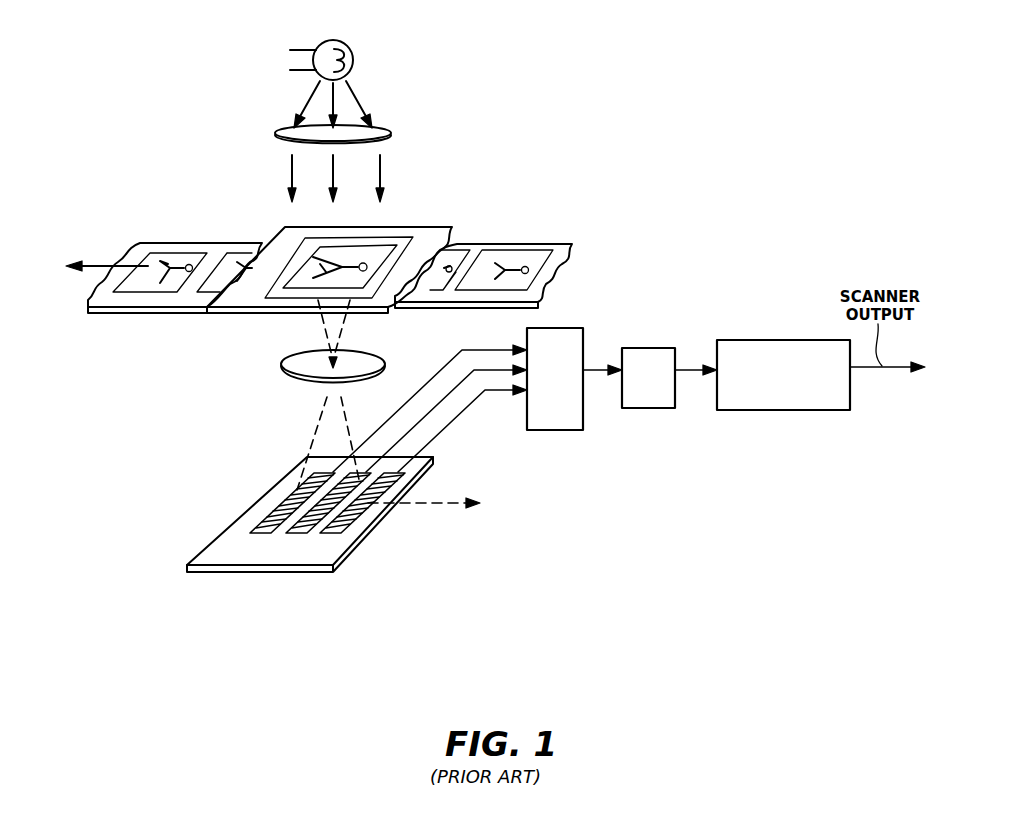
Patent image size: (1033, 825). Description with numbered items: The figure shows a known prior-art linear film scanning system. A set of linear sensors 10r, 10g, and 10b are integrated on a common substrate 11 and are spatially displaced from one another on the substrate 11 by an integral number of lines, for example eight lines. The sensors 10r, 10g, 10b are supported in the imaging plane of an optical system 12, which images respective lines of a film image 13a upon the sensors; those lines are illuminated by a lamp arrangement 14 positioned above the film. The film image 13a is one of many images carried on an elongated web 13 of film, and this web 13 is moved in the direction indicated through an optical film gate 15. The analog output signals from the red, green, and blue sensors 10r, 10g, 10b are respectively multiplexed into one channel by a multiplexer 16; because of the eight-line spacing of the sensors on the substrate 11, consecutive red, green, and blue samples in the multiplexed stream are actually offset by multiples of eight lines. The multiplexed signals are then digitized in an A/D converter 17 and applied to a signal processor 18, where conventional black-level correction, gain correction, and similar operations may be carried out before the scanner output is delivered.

The linear sensor (red) 10r is at (260, 514).
The linear sensor (green) 10g is at (302, 534).
The linear sensor (blue) 10b is at (345, 535).
The substrate 11 is at (226, 572).
The optical system 12 is at (283, 362).
The elongated web of film 13 is at (522, 243).
The film image 13a is at (378, 233).
The lamp arrangement 14 is at (353, 70).
The optical film gate 15 is at (372, 311).
The multiplexer 16 is at (560, 328).
The A/D converter 17 is at (645, 348).
The signal processor 18 is at (781, 340).